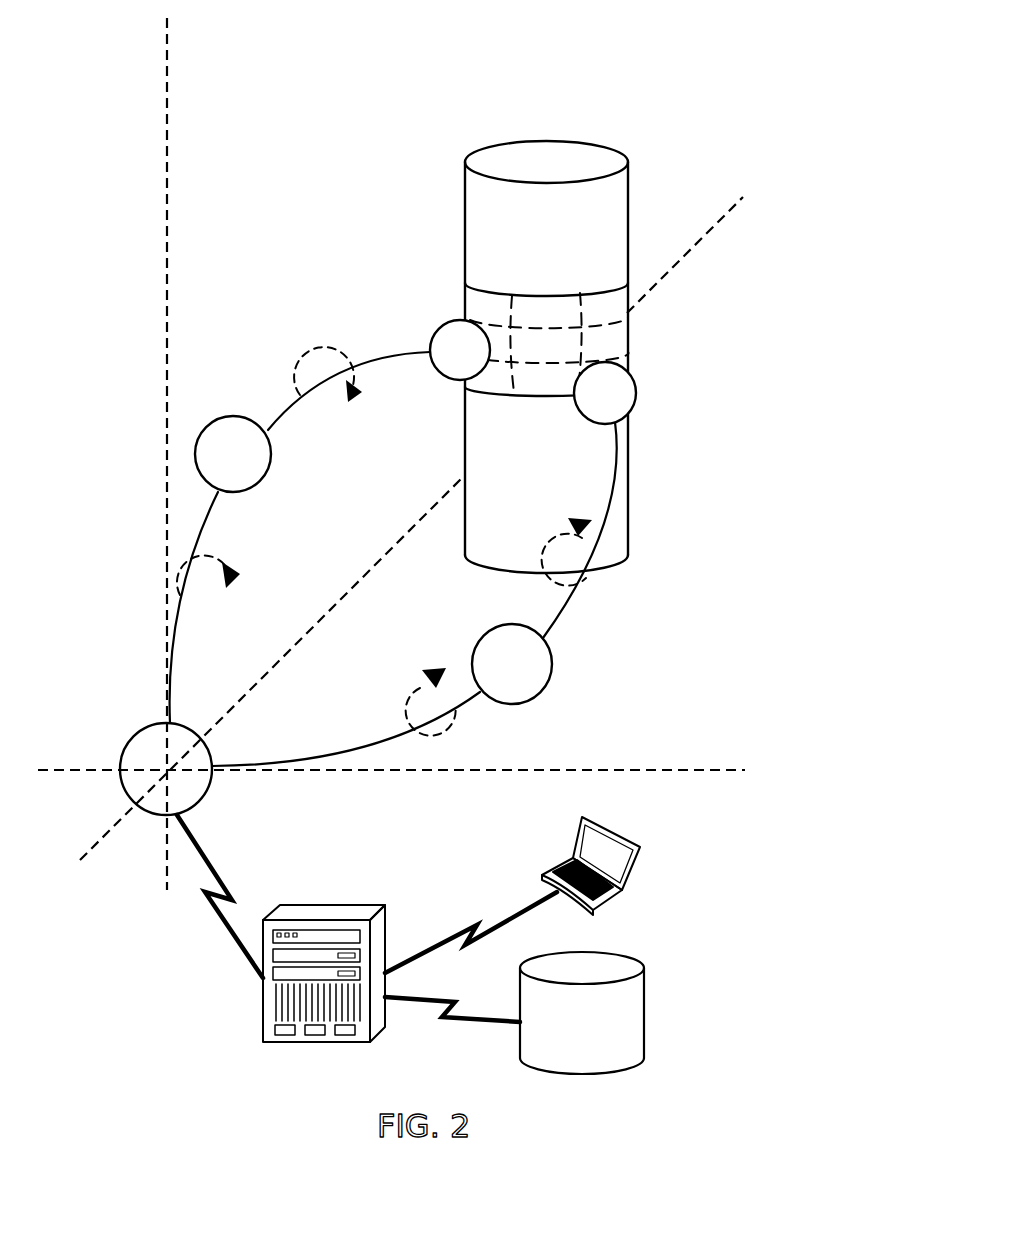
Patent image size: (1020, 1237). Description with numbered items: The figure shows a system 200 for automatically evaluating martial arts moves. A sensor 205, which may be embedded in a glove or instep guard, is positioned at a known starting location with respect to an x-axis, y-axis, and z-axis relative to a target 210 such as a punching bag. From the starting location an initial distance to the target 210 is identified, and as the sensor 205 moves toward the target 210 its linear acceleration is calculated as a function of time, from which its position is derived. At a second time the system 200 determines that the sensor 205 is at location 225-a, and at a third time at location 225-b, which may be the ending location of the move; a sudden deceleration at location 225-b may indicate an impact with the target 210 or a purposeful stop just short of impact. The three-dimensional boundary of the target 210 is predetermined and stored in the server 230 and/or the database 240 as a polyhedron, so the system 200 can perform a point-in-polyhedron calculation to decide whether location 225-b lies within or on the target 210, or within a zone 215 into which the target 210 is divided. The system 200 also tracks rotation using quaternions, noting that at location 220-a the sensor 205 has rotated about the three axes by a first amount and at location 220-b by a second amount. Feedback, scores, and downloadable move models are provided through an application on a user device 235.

The system 200 is at (439, 577).
The sensor 205 is at (192, 810).
The target 210 is at (537, 140).
The zone 215 is at (540, 292).
The location 220-a is at (543, 690).
The location 220-b is at (637, 398).
The location 225-a is at (196, 452).
The location 225-b is at (432, 332).
The server 230 is at (263, 1008).
The user device 235 is at (622, 893).
The database 240 is at (520, 1057).